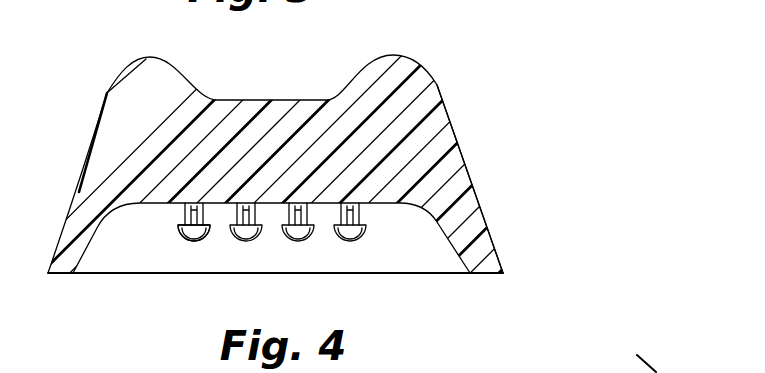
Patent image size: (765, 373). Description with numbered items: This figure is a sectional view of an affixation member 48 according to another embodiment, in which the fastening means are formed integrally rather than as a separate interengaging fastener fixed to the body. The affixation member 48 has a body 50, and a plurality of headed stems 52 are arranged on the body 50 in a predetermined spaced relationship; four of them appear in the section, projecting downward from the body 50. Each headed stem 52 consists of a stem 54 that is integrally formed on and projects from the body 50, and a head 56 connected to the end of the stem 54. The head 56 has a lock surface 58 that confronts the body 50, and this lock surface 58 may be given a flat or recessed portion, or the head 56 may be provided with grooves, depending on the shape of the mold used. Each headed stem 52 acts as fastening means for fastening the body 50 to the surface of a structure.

The affixation member 48 is at (432, 48).
The body 50 is at (452, 102).
The headed stem 52 is at (233, 252).
The stem 54 is at (342, 222).
The head 56 is at (289, 222).
The lock surface 58 is at (179, 227).